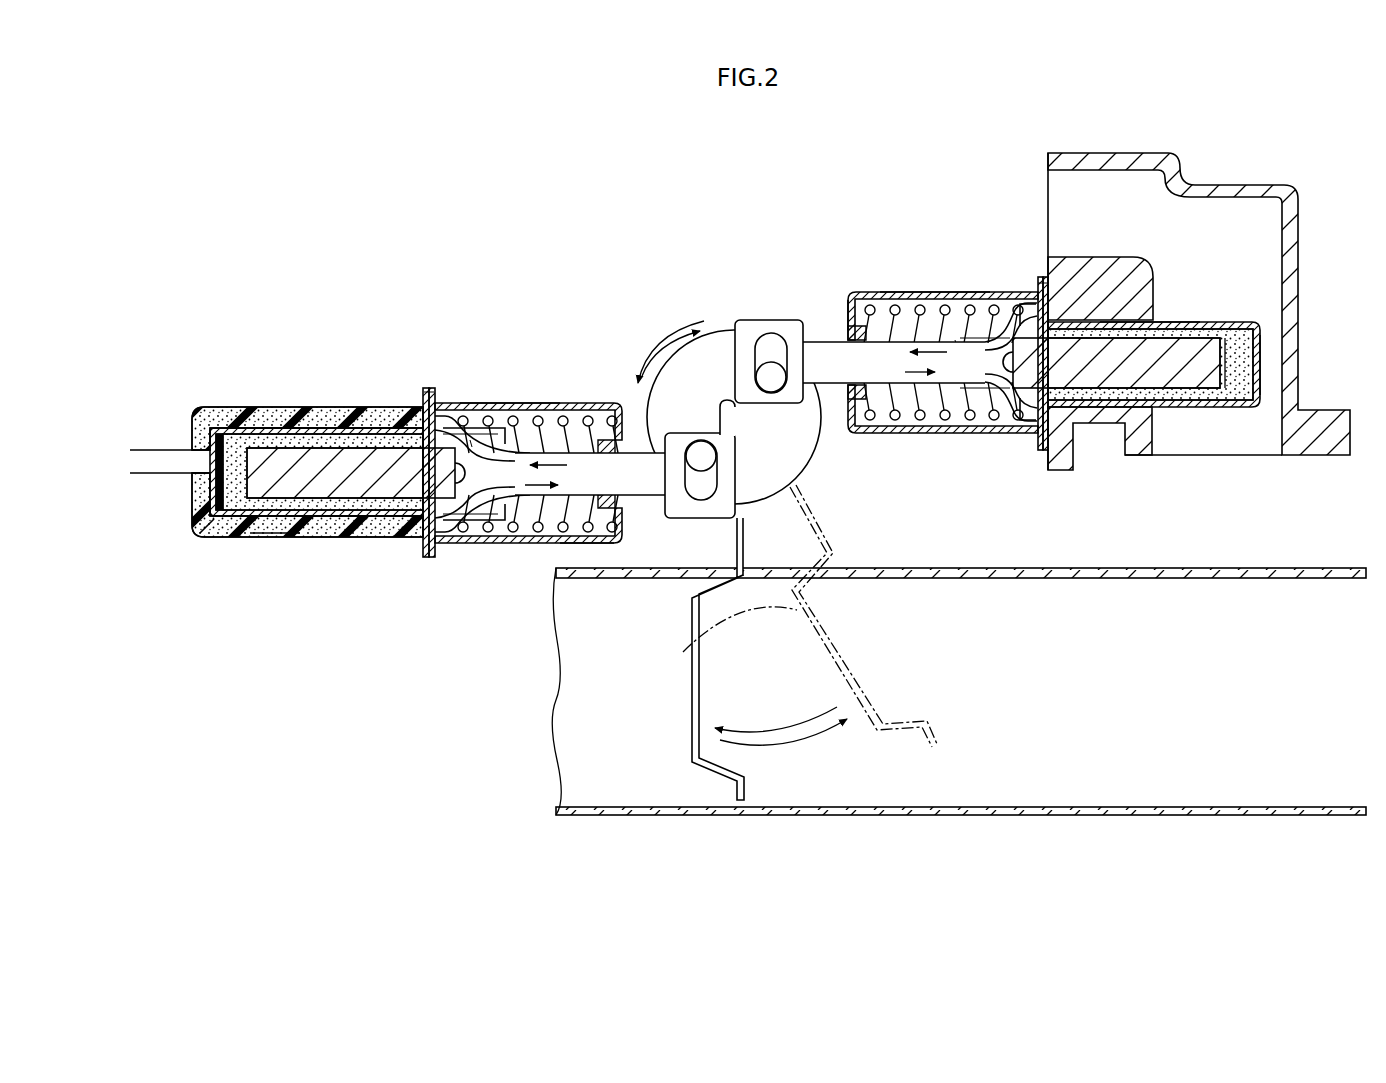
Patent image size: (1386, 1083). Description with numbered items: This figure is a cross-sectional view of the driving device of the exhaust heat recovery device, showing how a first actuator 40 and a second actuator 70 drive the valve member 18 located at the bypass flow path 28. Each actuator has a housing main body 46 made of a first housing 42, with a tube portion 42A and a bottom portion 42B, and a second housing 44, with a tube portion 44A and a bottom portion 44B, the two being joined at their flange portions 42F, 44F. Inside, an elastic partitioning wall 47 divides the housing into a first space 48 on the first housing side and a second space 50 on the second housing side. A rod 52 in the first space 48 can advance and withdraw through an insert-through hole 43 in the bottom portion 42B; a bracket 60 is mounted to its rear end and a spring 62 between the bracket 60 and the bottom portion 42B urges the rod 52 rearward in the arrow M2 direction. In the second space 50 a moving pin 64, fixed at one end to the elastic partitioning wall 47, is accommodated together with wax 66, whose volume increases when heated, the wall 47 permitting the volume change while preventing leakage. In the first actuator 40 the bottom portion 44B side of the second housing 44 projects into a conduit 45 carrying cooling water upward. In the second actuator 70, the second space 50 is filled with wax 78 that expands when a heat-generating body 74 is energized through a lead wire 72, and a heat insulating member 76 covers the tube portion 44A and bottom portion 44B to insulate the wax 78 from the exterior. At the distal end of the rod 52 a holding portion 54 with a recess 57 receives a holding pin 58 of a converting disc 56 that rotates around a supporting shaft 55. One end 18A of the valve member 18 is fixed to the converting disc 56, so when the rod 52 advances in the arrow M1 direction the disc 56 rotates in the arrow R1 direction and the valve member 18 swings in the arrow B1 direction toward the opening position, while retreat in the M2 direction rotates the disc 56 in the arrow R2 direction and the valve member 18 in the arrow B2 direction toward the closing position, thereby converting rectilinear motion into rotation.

The valve member 18 is at (697, 674).
The one end of valve member 18A is at (748, 511).
The bypass flow path 28 is at (958, 816).
The first actuator 40 is at (920, 162).
The first housing 42 is at (448, 403).
The tube portion 42A is at (537, 403).
The bottom portion 42B is at (623, 531).
The flange portion 42F is at (431, 556).
The insert-through hole 43 is at (624, 479).
The second housing 44 is at (383, 426).
The tube portion 44A is at (262, 420).
The bottom portion 44B is at (212, 491).
The flange portion 44F is at (426, 556).
The conduit 45 is at (1222, 214).
The housing main body 46 is at (370, 318).
The elastic partitioning wall 47 is at (452, 418).
The first space 48 is at (576, 418).
The second space 50 is at (236, 416).
The rod 52 is at (612, 530).
The holding portion 54 is at (744, 320).
The supporting shaft 55 is at (724, 408).
The converting disc 56 is at (797, 481).
The recess 57 is at (759, 336).
The holding pin 58 is at (700, 456).
The bracket 60 is at (505, 522).
The spring 62 is at (538, 527).
The moving pin 64 is at (345, 490).
The wax 66 is at (1237, 396).
The second actuator 70 is at (270, 300).
The lead wire 72 is at (154, 450).
The heat-generating body 74 is at (222, 536).
The heat insulating member 76 is at (282, 530).
The wax 78 is at (325, 420).
The arrow M1 direction M1 is at (485, 427).
The arrow M2 direction M2 is at (562, 466).
The arrow R1 direction R1 is at (670, 318).
The arrow R2 direction R2 is at (653, 338).
The arrow B1 direction B1 is at (785, 739).
The arrow B2 direction B2 is at (772, 725).